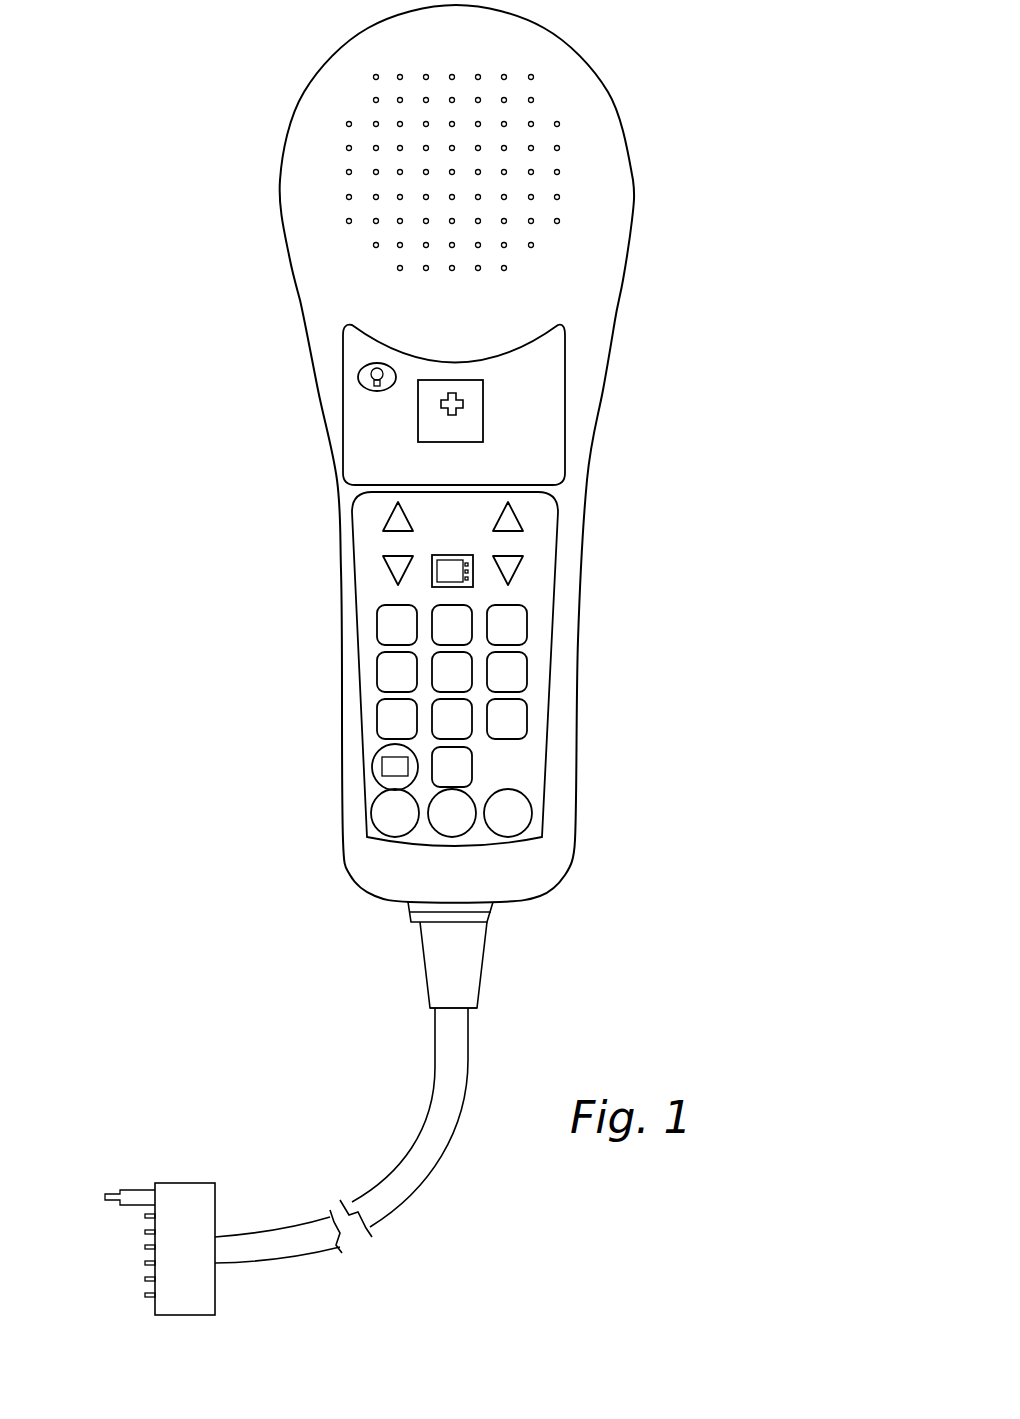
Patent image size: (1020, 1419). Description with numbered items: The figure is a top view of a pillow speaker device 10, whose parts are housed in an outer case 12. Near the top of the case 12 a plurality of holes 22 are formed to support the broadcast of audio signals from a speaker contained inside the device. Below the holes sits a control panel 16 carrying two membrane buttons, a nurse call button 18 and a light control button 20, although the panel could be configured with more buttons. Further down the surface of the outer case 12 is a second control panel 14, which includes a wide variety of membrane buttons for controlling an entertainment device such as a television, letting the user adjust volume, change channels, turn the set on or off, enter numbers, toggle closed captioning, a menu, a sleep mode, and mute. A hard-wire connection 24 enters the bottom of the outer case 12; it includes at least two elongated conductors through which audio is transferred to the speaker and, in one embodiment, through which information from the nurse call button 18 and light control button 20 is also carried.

The pillow speaker device 10 is at (697, 93).
The outer case 12 is at (556, 845).
The control panel 14 is at (367, 602).
The control panel 16 is at (530, 413).
The nurse call button 18 is at (478, 392).
The light control button 20 is at (372, 366).
The holes 22 is at (562, 272).
The hard-wire connection 24 is at (468, 945).